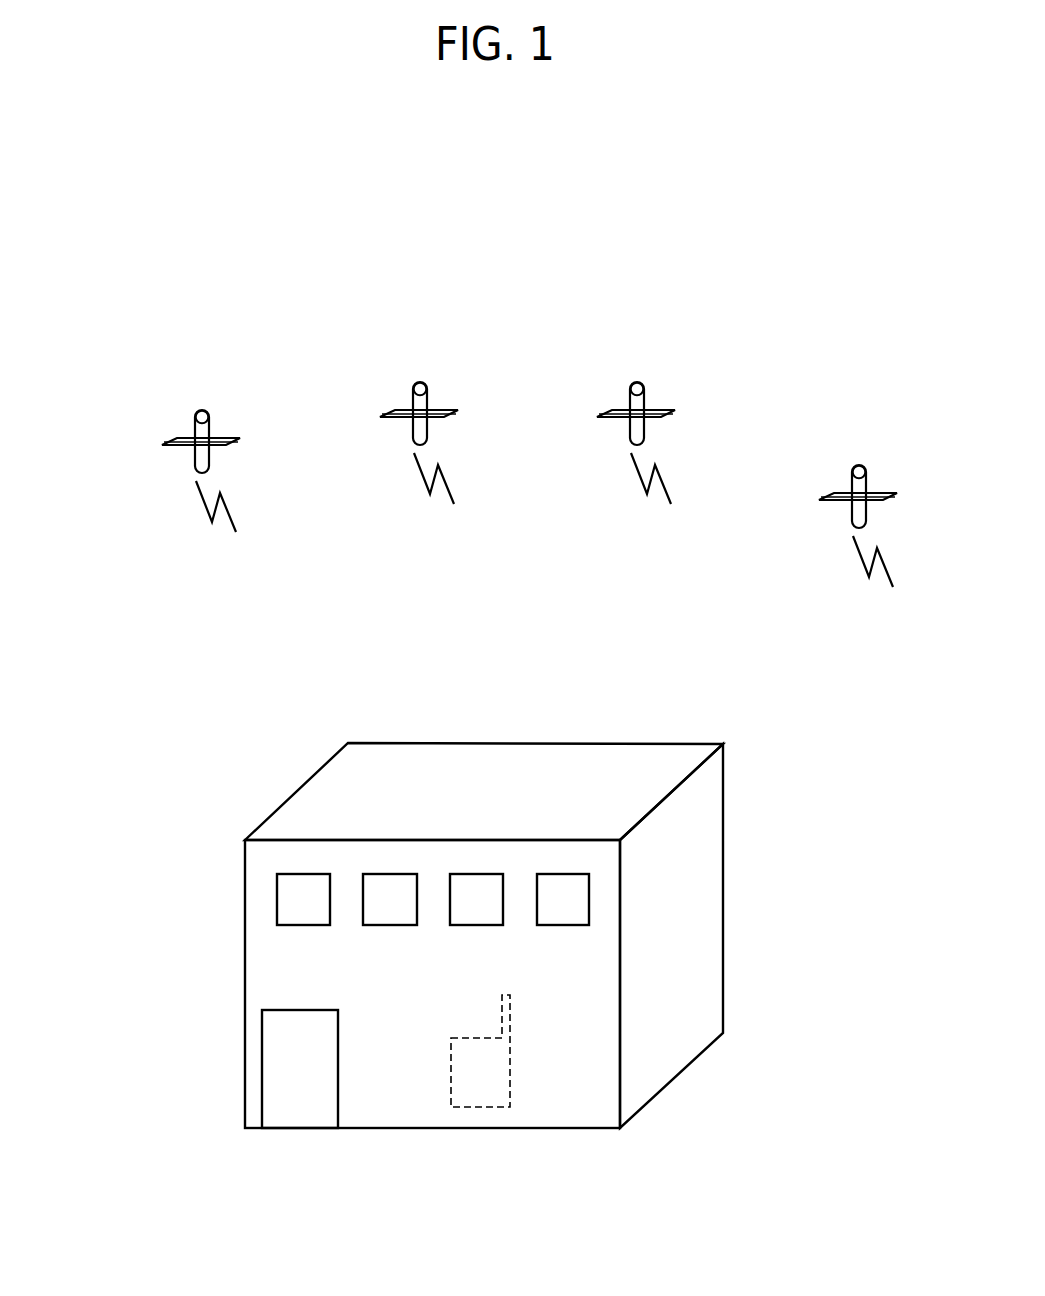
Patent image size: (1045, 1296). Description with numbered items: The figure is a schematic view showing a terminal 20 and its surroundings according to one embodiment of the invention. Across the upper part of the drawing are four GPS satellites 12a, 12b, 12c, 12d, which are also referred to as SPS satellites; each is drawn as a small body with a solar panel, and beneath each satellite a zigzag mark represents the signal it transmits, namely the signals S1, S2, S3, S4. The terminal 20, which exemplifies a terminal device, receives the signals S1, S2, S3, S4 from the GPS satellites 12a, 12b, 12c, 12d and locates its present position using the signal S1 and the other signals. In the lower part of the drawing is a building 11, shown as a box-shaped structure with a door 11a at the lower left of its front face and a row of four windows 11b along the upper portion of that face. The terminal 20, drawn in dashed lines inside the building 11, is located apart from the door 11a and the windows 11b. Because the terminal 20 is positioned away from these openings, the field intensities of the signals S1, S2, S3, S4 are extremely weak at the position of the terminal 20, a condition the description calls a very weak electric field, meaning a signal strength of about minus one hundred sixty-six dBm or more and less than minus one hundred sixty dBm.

The building 11 is at (284, 801).
The door 11a is at (262, 1070).
The windows 11b is at (563, 925).
The GPS satellite 12a is at (202, 409).
The GPS satellite 12b is at (420, 381).
The GPS satellite 12c is at (637, 381).
The GPS satellite 12d is at (859, 464).
The terminal 20 is at (475, 1108).
The signal S1 is at (202, 497).
The signal S2 is at (421, 468).
The signal S3 is at (639, 468).
The signal S4 is at (862, 551).